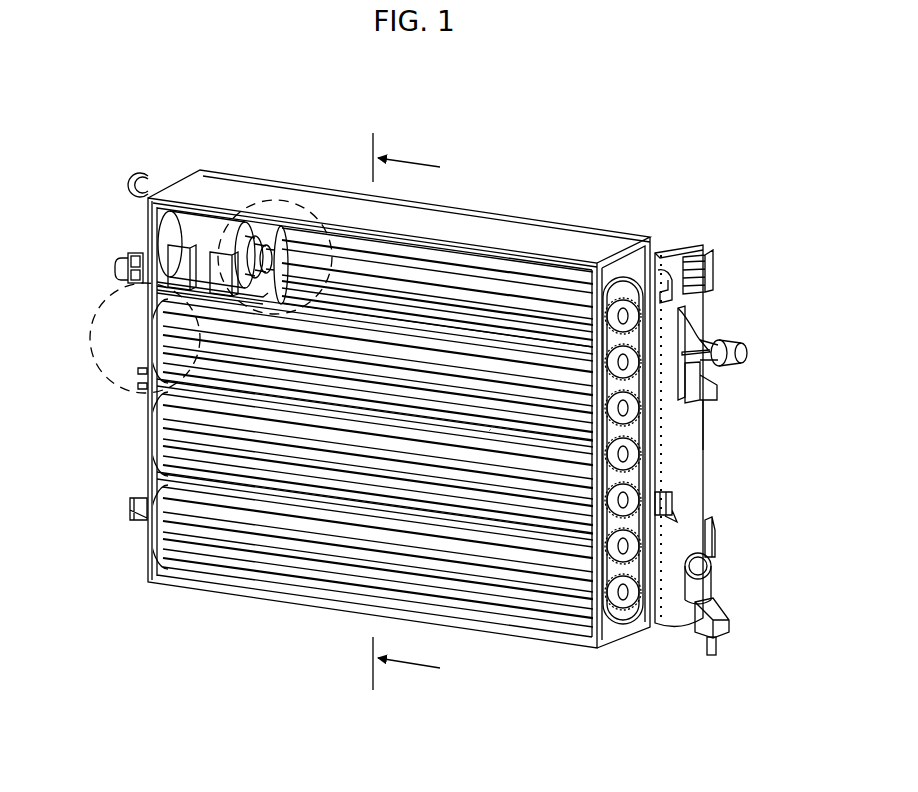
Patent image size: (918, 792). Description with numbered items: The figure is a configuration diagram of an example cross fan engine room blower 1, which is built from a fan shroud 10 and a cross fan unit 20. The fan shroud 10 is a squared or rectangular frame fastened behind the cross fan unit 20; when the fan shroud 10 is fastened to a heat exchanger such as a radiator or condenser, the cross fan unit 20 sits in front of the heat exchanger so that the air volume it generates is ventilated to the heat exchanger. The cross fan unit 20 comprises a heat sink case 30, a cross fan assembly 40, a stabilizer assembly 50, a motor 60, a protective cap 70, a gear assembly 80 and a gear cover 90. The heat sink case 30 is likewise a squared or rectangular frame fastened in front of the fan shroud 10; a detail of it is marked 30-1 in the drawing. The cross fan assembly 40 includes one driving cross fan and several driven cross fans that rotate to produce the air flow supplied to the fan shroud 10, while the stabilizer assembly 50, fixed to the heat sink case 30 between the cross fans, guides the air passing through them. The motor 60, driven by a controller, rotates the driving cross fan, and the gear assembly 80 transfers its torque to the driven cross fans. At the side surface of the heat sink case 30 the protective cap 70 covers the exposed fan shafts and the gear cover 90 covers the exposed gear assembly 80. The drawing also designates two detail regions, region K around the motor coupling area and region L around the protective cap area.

The cross fan engine room blower 1 is at (723, 150).
The fan shroud 10 is at (693, 322).
The cross fan unit 20 is at (115, 462).
The heat sink case 30 is at (198, 175).
The motor mounting part 30-1 is at (180, 232).
The cross fan assembly 40 is at (340, 552).
The stabilizer assembly 50 is at (490, 523).
The motor 60 is at (148, 196).
The protective cap 70 is at (142, 328).
The gear assembly 80 is at (617, 283).
The gear cover 90 is at (643, 425).
The coupling region K is at (283, 202).
The sensor region L is at (100, 368).